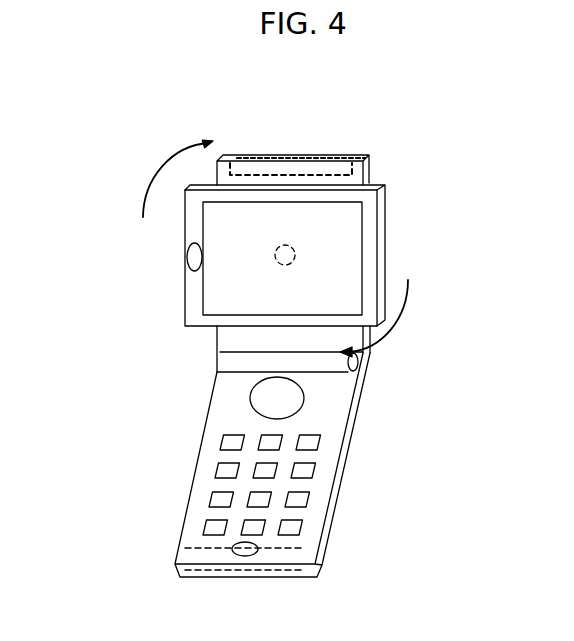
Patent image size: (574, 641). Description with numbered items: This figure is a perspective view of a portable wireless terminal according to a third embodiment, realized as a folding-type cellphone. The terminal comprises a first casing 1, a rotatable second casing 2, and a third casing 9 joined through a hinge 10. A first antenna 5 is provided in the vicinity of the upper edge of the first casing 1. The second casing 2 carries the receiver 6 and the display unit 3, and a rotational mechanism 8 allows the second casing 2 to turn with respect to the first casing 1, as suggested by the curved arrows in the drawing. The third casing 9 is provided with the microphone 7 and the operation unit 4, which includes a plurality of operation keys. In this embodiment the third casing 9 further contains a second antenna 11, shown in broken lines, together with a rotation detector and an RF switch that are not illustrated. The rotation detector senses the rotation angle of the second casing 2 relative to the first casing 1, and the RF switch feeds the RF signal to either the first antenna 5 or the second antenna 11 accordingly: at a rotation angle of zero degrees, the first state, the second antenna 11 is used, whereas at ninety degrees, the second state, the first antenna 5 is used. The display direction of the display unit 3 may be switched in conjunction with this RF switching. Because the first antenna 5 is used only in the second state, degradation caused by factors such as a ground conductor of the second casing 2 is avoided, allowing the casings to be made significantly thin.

The first casing 1 is at (217, 340).
The second casing 2 is at (378, 228).
The display unit 3 is at (357, 265).
The operation unit 4 is at (298, 403).
The antenna 5 is at (323, 154).
The receiver 6 is at (187, 256).
The microphone 7 is at (232, 549).
The rotational mechanism 8 is at (274, 256).
The third casing 9 is at (318, 515).
The hinge 10 is at (218, 369).
The second antenna 11 is at (192, 557).